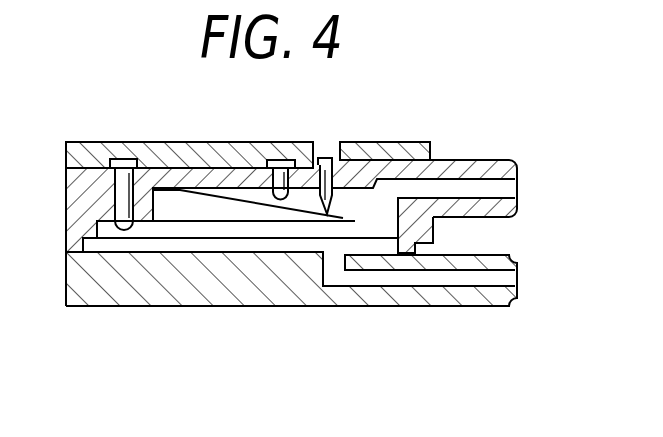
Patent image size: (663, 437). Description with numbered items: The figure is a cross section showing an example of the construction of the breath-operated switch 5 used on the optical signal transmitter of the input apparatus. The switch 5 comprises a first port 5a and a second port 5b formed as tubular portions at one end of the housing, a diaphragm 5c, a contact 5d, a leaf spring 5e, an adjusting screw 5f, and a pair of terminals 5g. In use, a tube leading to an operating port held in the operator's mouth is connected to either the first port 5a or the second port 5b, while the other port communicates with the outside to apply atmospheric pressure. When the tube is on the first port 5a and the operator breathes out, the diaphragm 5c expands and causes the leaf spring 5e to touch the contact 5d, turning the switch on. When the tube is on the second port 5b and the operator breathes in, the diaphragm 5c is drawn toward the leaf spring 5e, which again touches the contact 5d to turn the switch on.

The breath-operated switch 5 is at (418, 127).
The first port 5a is at (518, 280).
The second port 5b is at (518, 188).
The diaphragm 5c is at (197, 238).
The contact 5d is at (250, 205).
The leaf spring 5e is at (290, 224).
The adjusting screw 5f is at (326, 155).
The terminals 5g is at (130, 147).